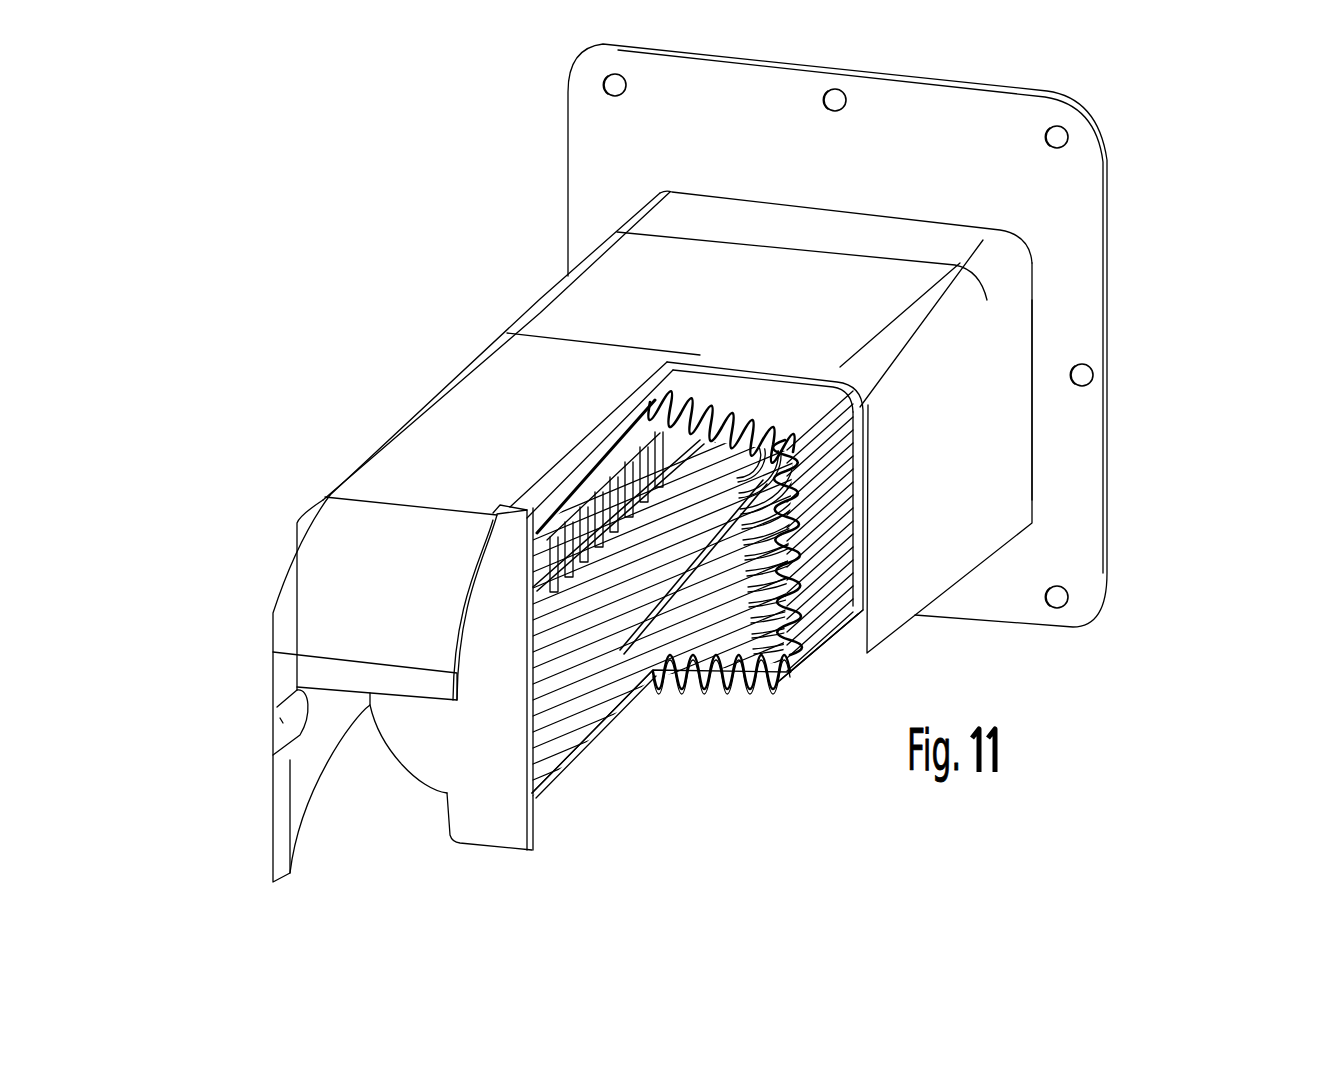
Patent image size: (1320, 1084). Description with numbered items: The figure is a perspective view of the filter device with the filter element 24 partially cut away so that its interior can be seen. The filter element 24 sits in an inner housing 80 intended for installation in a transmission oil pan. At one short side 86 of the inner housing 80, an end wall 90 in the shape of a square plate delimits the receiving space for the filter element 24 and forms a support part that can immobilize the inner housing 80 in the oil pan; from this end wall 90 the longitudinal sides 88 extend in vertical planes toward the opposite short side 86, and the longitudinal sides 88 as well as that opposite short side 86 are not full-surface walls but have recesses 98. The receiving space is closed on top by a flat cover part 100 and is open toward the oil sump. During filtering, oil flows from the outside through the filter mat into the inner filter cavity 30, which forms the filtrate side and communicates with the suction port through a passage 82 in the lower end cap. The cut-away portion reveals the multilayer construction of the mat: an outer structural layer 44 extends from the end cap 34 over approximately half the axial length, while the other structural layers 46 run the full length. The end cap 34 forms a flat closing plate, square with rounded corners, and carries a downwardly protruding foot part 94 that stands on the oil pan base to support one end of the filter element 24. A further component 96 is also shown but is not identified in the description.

The filter element 24 is at (756, 715).
The inner filter cavity 30 is at (590, 567).
The end cap 34 is at (413, 727).
The structural layer 44 is at (850, 553).
The other structural layers 46 is at (826, 611).
The inner housing 80 is at (290, 530).
The passage 82 is at (722, 455).
The short side 86 is at (925, 218).
The longitudinal sides 88 is at (967, 388).
The end wall 90 is at (1073, 305).
The foot part 94 is at (497, 823).
The corrugated spring element 96 is at (655, 665).
The recesses 98 is at (273, 753).
The cover part 100 is at (515, 387).